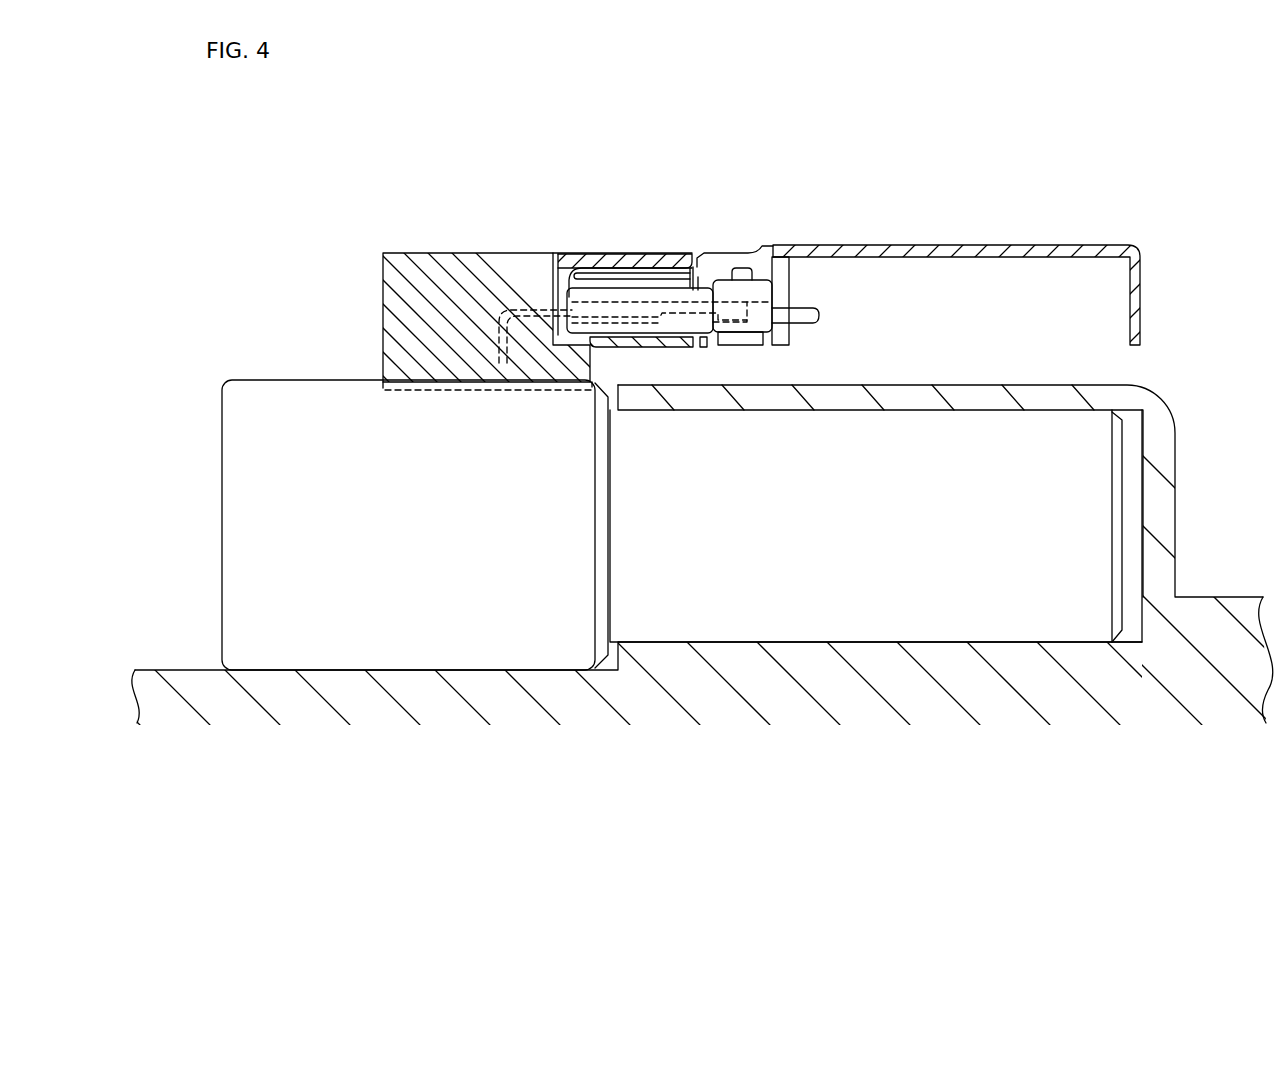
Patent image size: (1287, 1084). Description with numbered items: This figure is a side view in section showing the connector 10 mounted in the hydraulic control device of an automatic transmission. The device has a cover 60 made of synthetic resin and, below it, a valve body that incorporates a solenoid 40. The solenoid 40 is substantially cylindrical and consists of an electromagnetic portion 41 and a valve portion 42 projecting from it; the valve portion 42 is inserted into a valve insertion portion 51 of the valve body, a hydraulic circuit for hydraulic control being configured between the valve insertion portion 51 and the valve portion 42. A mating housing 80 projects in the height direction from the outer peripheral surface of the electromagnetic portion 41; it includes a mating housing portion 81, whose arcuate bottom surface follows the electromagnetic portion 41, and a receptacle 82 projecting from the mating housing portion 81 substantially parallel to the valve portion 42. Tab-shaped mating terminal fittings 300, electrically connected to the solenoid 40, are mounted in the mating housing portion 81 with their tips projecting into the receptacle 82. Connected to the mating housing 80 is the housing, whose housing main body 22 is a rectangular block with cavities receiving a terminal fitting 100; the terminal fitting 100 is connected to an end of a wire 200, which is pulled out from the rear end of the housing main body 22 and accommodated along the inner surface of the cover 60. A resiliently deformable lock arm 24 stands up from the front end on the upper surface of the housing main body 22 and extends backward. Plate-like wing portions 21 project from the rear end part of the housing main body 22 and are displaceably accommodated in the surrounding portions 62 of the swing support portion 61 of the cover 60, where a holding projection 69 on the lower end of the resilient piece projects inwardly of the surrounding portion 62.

The connector 10 is at (783, 183).
The wing portion 21 is at (723, 292).
The housing main body 22 is at (607, 292).
The lock arm 24 is at (634, 268).
The solenoid 40 is at (264, 380).
The electromagnetic portion 41 is at (336, 393).
The valve portion 42 is at (1068, 428).
The valve insertion portion 51 is at (1158, 432).
The cover 60 is at (1031, 247).
The swing support portion 61 is at (757, 250).
The surrounding portion 62 is at (762, 293).
The holding projection 69 is at (728, 345).
The mating housing 80 is at (403, 252).
The mating housing portion 81 is at (451, 260).
The receptacle 82 is at (692, 253).
The terminal fitting 100 is at (588, 298).
The wire 200 is at (818, 310).
The mating terminal fitting 300 is at (514, 308).